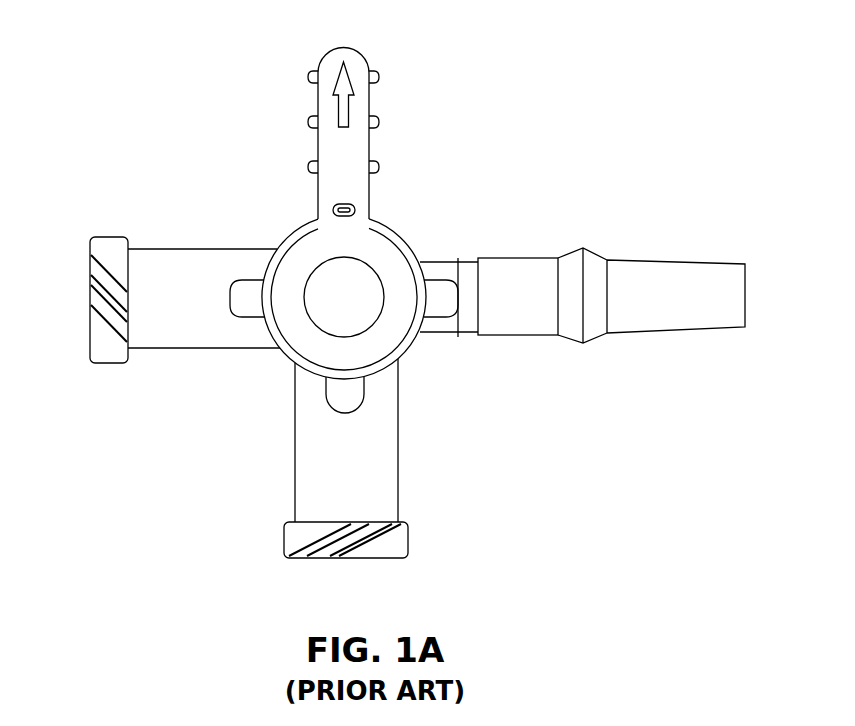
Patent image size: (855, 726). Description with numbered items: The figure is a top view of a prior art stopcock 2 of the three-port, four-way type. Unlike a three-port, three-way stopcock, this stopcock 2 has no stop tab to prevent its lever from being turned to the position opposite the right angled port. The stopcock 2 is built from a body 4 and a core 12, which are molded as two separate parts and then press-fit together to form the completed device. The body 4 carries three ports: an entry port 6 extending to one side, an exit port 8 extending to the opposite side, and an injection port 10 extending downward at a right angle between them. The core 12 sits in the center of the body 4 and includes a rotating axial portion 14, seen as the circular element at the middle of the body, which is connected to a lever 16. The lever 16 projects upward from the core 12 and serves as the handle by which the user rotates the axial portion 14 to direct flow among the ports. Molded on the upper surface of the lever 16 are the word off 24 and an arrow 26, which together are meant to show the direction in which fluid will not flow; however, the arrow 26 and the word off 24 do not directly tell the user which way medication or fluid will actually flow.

The stopcock 2 is at (446, 53).
The body 4 is at (217, 349).
The entry port 6 is at (90, 308).
The exit port 8 is at (745, 290).
The injection port 10 is at (372, 560).
The core 12 is at (405, 234).
The rotating axial portion 14 is at (320, 275).
The lever 16 is at (276, 132).
The word "off" 24 is at (355, 192).
The arrow 26 is at (346, 86).